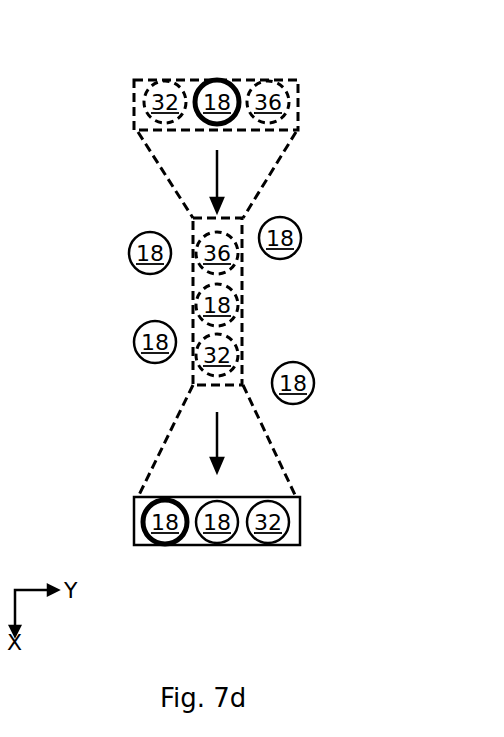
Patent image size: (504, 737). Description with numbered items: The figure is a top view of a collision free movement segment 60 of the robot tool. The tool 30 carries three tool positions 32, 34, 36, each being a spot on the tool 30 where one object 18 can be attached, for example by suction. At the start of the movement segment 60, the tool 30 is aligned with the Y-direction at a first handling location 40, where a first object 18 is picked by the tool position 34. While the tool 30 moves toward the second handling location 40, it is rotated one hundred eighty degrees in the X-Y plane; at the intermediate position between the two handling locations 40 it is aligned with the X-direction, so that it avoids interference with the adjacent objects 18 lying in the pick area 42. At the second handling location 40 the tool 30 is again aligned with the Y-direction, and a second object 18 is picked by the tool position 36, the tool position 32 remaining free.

The object 18 is at (221, 316).
The tool 30 is at (292, 88).
The tool position 32 is at (216, 312).
The tool position 34 is at (228, 80).
The tool position 36 is at (160, 545).
The handling location 40 is at (211, 80).
The pick area 42 is at (85, 146).
The movement segment 60 is at (185, 433).